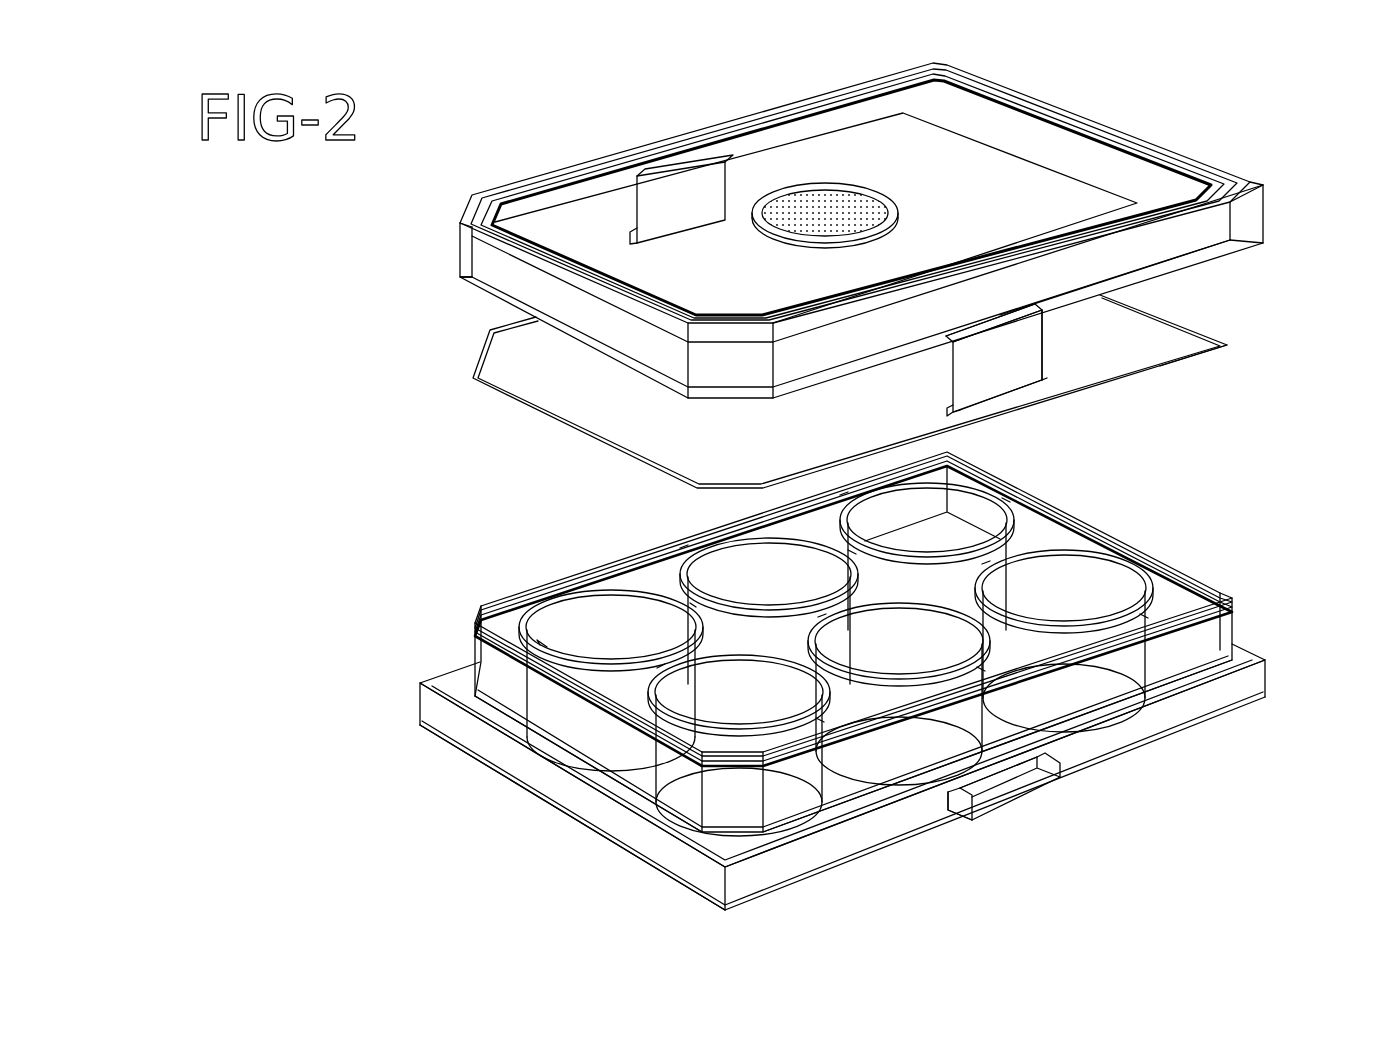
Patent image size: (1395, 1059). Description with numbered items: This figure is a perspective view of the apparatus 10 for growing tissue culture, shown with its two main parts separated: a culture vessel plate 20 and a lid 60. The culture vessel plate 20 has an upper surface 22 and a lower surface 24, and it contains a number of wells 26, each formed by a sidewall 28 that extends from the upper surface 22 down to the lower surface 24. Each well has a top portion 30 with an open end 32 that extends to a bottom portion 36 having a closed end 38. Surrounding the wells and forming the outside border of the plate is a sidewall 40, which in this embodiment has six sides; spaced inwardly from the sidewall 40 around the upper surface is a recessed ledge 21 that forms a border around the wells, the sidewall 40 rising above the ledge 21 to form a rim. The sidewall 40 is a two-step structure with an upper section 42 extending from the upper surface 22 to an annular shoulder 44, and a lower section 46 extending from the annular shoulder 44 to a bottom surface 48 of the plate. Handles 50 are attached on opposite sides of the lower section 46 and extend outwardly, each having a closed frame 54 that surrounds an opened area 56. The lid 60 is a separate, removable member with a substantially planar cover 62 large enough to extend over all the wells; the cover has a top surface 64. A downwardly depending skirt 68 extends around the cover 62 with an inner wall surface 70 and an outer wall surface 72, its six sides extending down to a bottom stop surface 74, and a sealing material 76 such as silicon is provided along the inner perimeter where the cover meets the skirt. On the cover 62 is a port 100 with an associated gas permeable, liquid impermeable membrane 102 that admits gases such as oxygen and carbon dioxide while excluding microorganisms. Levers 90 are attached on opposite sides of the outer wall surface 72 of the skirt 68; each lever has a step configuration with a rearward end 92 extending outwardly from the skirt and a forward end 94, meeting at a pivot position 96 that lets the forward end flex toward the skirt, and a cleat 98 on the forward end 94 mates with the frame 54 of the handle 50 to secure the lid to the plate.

The apparatus 10 is at (348, 302).
The culture vessel plate 20 is at (1224, 622).
The recessed ledge 21 is at (540, 585).
The upper surface 22 is at (1180, 590).
The lower surface 24 is at (880, 830).
The wells 26 is at (1047, 593).
The sidewall 28 is at (710, 560).
The top portion 30 is at (1098, 590).
The open end 32 is at (1088, 615).
The bottom portion 36 is at (1088, 768).
The closed end 38 is at (1128, 740).
The sidewall 40 is at (643, 783).
The upper section 42 is at (478, 662).
The annular shoulder 44 is at (442, 680).
The lower section 46 is at (456, 722).
The bottom surface 48 is at (478, 757).
The handles 50 is at (1015, 798).
The closed frame 54 is at (1040, 782).
The opened area 56 is at (972, 815).
The lid 60 is at (1184, 157).
The planar cover 62 is at (1092, 166).
The top surface 64 is at (1002, 168).
The skirt 68 is at (600, 330).
The inner wall surface 70 is at (495, 242).
The outer wall surface 72 is at (1250, 215).
The bottom stop surface 74 is at (1172, 272).
The sealing material 76 is at (1228, 348).
The levers 90 is at (637, 195).
The rearward end 92 is at (1103, 304).
The forward end 94 is at (1025, 348).
The pivot position 96 is at (946, 336).
The cleat 98 is at (634, 232).
The port 100 is at (787, 215).
The membrane 102 is at (838, 205).